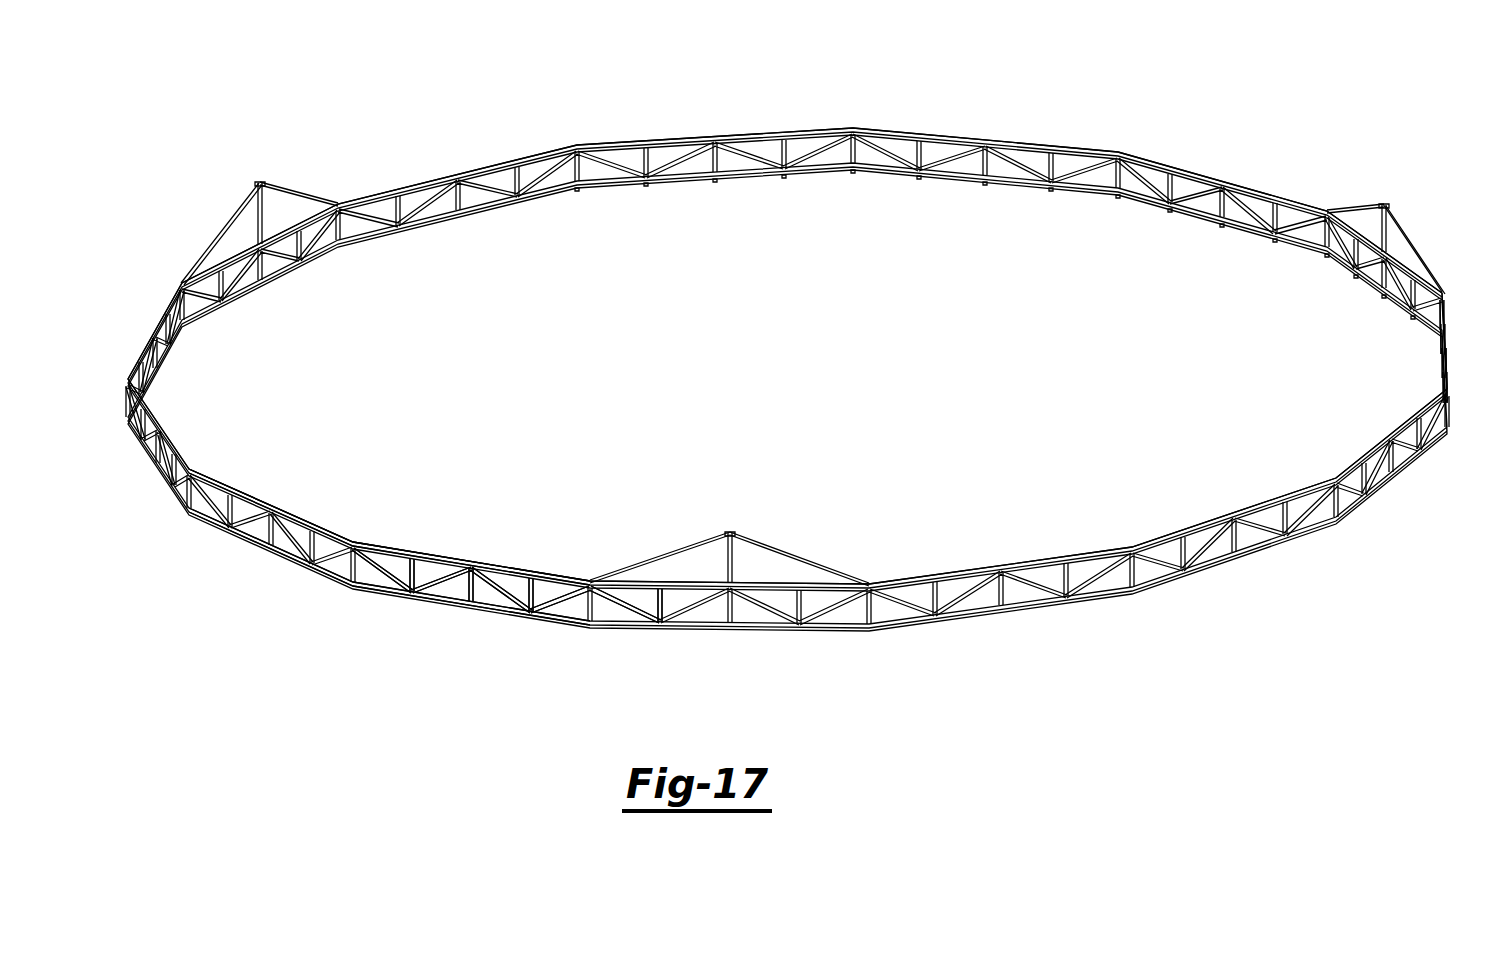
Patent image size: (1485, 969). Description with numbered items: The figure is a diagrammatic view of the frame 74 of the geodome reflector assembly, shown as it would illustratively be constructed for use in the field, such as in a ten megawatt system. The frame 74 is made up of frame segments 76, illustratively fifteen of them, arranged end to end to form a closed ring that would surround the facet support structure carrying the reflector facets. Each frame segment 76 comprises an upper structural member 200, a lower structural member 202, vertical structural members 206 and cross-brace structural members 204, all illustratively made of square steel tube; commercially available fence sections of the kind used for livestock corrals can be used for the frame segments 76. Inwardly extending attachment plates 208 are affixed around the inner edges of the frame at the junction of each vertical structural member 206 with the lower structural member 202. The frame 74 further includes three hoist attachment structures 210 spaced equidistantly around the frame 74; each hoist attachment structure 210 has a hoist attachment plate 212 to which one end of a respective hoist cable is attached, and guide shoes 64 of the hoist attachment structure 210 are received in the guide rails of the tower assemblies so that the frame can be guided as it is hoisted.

The guide shoe 64 is at (654, 634).
The frame 74 is at (1221, 124).
The frame segment 76 is at (612, 146).
The upper structural member 200 is at (570, 573).
The lower structural member 202 is at (553, 622).
The cross-brace structural member 204 is at (450, 572).
The vertical structural member 206 is at (547, 597).
The attachment plate 208 is at (983, 197).
The hoist attachment structure 210 is at (222, 233).
The hoist attachment plate 212 is at (264, 185).